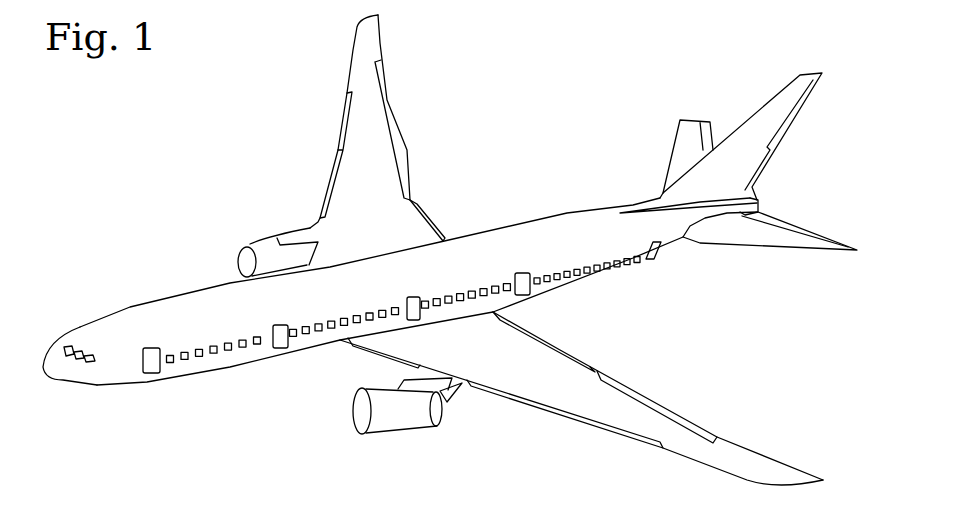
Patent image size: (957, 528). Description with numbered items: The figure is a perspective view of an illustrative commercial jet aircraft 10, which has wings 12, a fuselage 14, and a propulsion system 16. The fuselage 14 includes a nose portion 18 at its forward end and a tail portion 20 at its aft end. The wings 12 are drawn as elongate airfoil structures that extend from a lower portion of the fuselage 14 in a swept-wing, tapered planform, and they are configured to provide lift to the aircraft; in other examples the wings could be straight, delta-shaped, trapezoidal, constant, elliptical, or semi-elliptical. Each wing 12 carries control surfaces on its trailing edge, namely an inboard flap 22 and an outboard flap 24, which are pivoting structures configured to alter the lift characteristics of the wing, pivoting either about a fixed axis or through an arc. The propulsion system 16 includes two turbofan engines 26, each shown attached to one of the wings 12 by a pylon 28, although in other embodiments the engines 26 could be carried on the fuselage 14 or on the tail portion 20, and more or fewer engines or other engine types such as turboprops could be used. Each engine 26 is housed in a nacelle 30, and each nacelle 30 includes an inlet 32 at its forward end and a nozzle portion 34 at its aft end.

The commercial jet aircraft 10 is at (90, 115).
The wings 12 is at (357, 62).
The fuselage 14 is at (578, 225).
The propulsion system 16 is at (371, 462).
The nose portion 18 is at (121, 407).
The tail portion 20 is at (672, 279).
The inboard flap 22 is at (425, 220).
The outboard flap 24 is at (406, 168).
The turbofan engines 26 is at (222, 223).
The pylons 28 is at (408, 382).
The nacelle 30 is at (399, 432).
The inlet 32 is at (352, 411).
The nozzle portion 34 is at (457, 407).